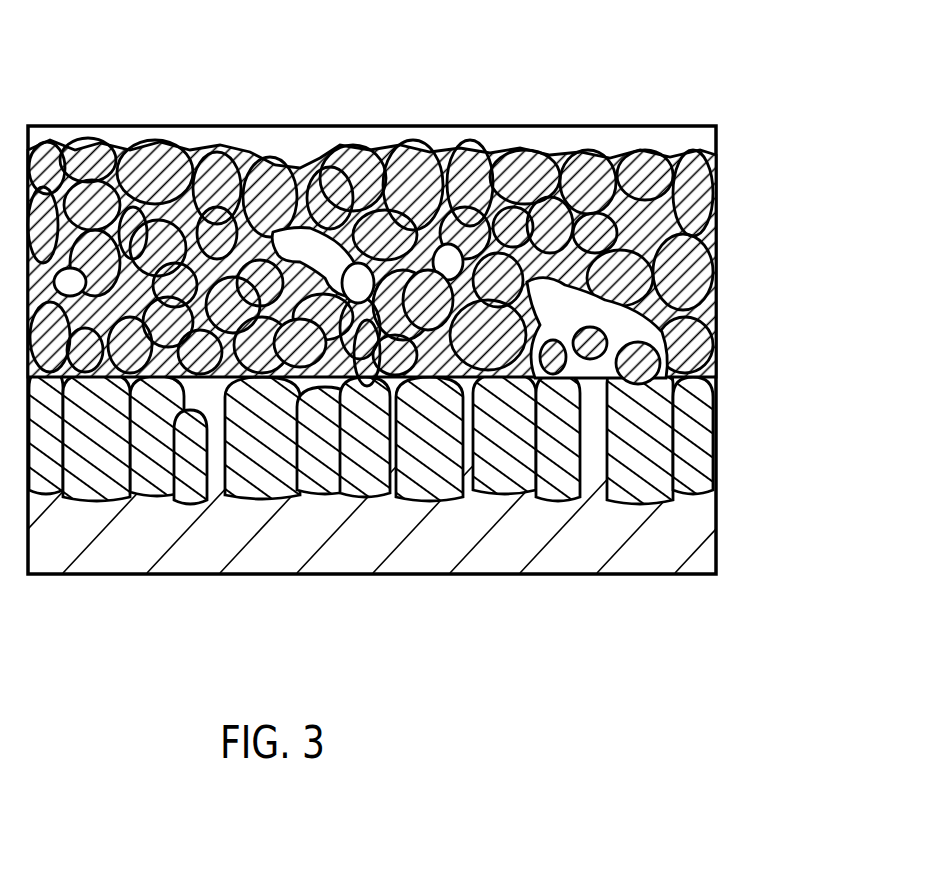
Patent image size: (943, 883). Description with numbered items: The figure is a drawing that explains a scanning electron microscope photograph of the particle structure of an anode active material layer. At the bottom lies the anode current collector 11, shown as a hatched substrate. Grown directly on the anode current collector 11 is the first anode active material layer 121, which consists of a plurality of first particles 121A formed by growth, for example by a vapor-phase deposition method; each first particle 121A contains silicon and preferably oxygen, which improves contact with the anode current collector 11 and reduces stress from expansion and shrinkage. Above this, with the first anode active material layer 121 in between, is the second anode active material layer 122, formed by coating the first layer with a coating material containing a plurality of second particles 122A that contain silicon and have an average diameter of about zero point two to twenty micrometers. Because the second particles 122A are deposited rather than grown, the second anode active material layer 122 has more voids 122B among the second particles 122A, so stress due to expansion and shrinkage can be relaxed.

The anode current collector 11 is at (693, 517).
The first anode active material layer 121 is at (727, 383).
The first particle 121A is at (95, 400).
The second anode active material layer 122 is at (727, 158).
The second particle 122A is at (303, 350).
The void 122B is at (432, 315).